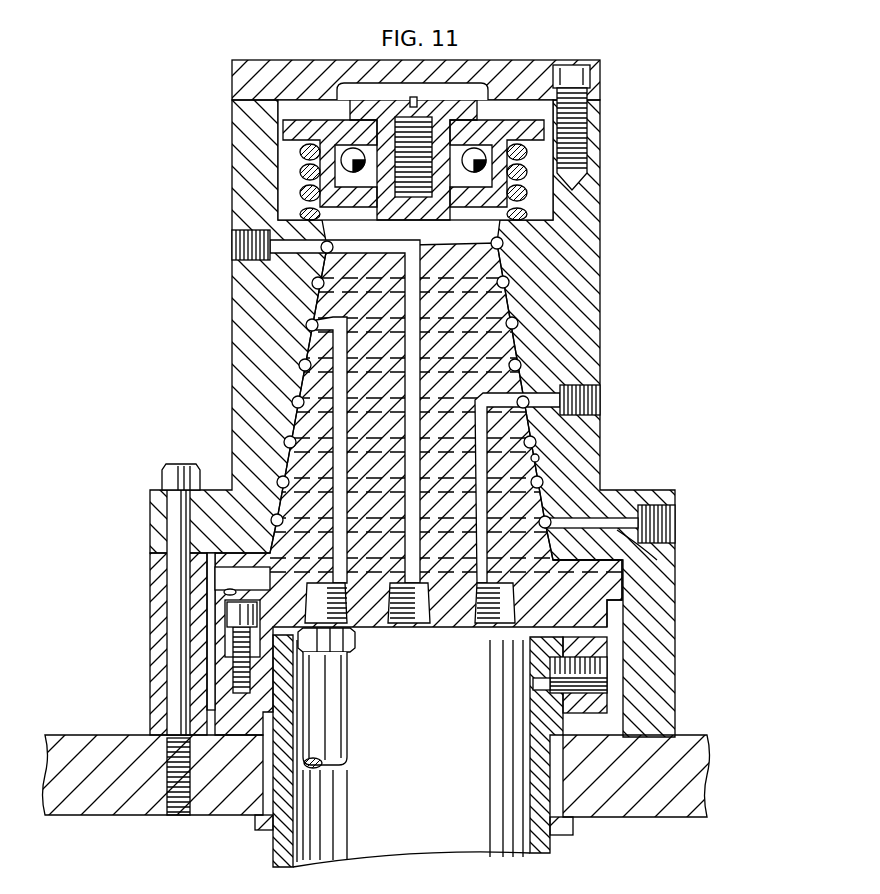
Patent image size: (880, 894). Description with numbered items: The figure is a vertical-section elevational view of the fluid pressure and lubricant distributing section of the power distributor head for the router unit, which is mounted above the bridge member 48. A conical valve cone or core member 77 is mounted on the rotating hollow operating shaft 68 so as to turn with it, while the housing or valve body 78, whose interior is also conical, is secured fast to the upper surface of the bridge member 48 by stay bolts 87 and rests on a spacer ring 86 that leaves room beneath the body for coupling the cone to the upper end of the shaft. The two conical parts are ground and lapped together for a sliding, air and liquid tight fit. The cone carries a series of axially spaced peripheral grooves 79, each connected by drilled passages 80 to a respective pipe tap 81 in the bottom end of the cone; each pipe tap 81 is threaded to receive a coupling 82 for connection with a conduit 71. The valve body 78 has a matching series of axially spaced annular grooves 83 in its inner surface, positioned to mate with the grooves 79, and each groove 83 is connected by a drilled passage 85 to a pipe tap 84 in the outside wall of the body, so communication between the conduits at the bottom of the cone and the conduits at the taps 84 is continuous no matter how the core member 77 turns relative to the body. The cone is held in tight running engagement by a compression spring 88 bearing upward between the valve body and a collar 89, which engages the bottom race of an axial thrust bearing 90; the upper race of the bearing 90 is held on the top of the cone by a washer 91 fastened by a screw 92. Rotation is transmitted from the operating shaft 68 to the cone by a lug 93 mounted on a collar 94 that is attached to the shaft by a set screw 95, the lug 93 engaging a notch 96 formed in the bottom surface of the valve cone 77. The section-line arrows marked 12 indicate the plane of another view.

The valve body 78 is at (582, 337).
The valve cone 77 is at (533, 553).
The screw 92 is at (393, 100).
The washer 91 is at (465, 104).
The collar 89 is at (530, 132).
The compression spring 88 is at (302, 167).
The axial thrust bearing 90 is at (593, 94).
The drilled passages 80 is at (415, 270).
The pipe tap 84 is at (231, 238).
The drilled passage 85 is at (277, 262).
The annular grooves 83 is at (311, 323).
The peripheral grooves 79 is at (513, 322).
The pipe tap 81 is at (483, 625).
The notch 96 is at (228, 592).
The spacer ring 86 is at (157, 643).
The stay bolts 87 is at (181, 581).
The collar 94 is at (227, 688).
The lug 93 is at (223, 615).
The operating shaft 68 is at (287, 827).
The coupling 82 is at (350, 648).
The conduit 71 is at (347, 740).
The set screw 95 is at (590, 668).
The bridge member 48 is at (688, 752).
The section line 12 is at (246, 845).